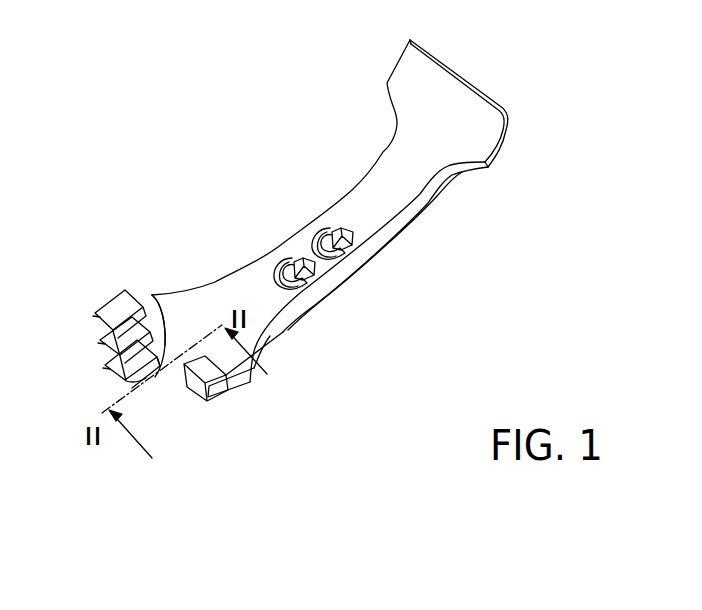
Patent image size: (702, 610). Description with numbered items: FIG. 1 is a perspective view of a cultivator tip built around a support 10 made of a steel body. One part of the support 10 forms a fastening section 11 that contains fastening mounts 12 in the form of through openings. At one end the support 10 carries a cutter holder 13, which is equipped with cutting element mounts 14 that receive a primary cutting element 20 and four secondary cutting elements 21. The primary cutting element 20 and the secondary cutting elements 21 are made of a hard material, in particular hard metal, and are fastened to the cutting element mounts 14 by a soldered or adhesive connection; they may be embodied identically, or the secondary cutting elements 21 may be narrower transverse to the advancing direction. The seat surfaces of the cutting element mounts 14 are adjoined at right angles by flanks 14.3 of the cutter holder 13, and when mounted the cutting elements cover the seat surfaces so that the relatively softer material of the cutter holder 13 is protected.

The support 10 is at (345, 205).
The fastening section 11 is at (298, 242).
The fastening mounts 12 is at (302, 258).
The cutter holder 13 is at (172, 293).
The cutting element mounts 14 is at (157, 341).
The flanks 14.3 is at (157, 350).
The primary cutting element 20 is at (120, 367).
The secondary cutting elements 21 is at (93, 317).